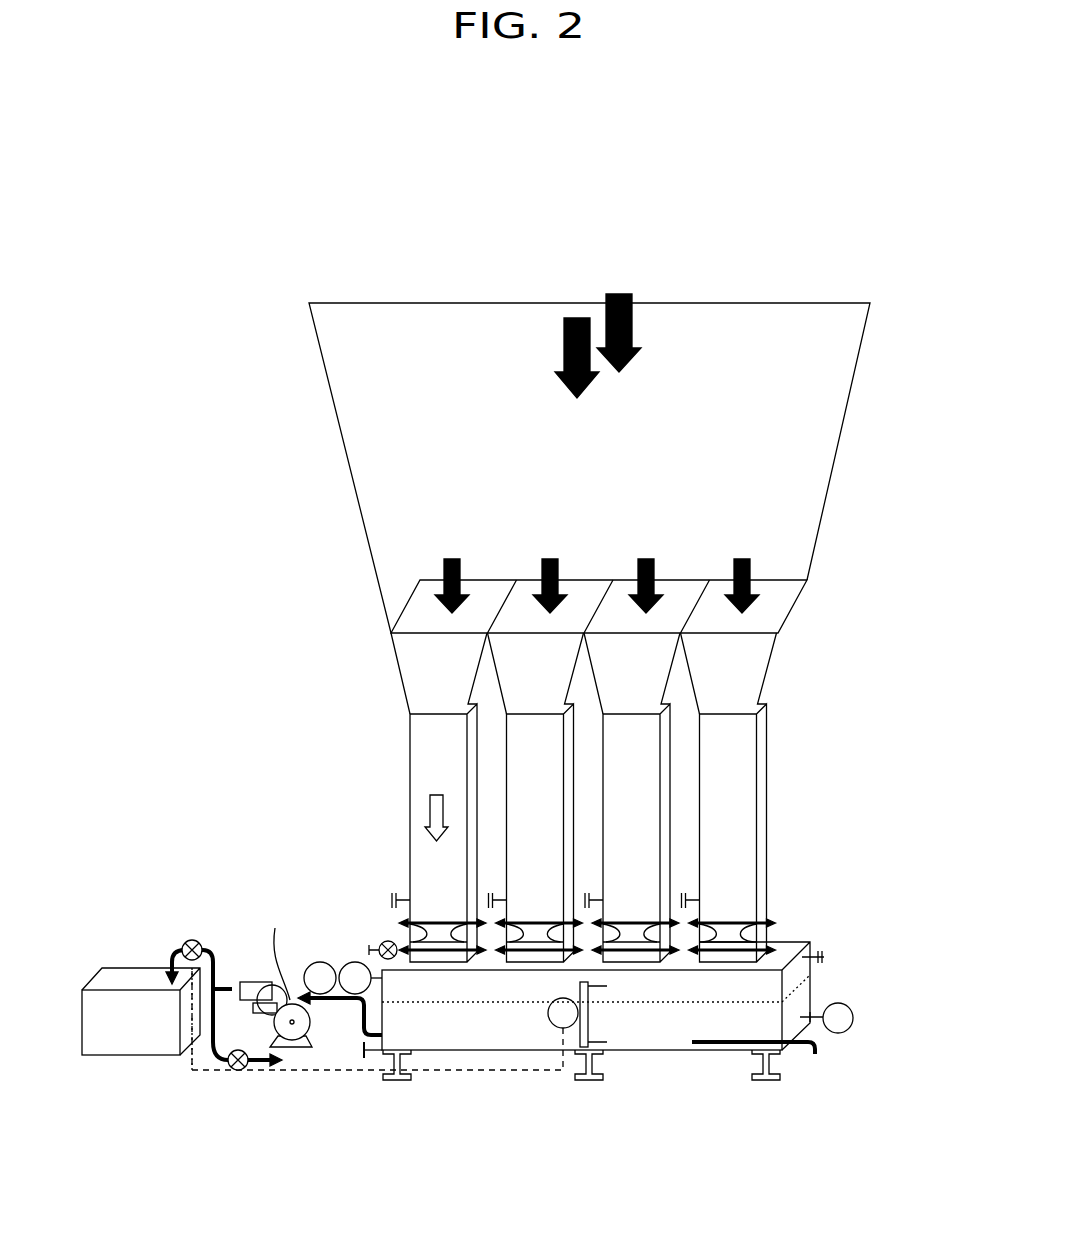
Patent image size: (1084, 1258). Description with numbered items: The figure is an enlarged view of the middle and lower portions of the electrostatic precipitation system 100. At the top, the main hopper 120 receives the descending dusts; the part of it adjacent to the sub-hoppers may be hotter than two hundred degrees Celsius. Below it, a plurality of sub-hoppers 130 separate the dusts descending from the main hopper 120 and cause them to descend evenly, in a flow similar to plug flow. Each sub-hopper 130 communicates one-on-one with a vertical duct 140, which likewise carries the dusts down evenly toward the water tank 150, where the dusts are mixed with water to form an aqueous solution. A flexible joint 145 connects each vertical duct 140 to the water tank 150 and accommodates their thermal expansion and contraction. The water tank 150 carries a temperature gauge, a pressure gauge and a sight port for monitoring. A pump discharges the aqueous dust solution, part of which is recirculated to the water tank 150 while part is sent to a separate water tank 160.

The electrostatic precipitation system 100 is at (786, 221).
The main hopper 120 is at (782, 432).
The sub-hoppers 130 is at (753, 673).
The vertical ducts 140 is at (743, 828).
The flexible joint 145 is at (773, 938).
The water tank 150 is at (661, 988).
The separate water tank 160 is at (122, 1042).